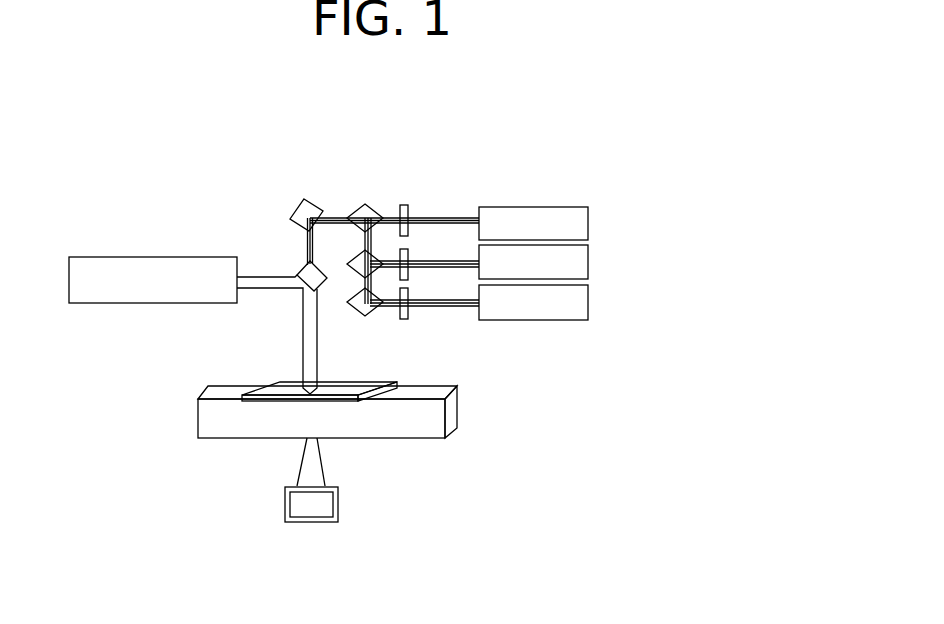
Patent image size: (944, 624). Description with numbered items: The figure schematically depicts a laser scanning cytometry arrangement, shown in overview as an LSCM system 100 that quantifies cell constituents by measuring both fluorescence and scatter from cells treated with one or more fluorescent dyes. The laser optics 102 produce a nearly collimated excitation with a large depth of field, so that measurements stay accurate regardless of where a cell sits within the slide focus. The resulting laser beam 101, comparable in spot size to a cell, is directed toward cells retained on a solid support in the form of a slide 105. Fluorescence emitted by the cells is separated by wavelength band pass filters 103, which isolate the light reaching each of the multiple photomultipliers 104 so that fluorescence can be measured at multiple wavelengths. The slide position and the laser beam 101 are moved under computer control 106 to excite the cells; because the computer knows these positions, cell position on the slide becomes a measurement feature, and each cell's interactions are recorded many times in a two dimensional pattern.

The LSCM system 100 is at (735, 203).
The laser beam 101 is at (298, 289).
The laser optics 102 is at (224, 239).
The wavelength band pass filters 103 is at (388, 192).
The photomultipliers 104 is at (588, 298).
The slide 105 is at (393, 385).
The computer control 106 is at (263, 294).